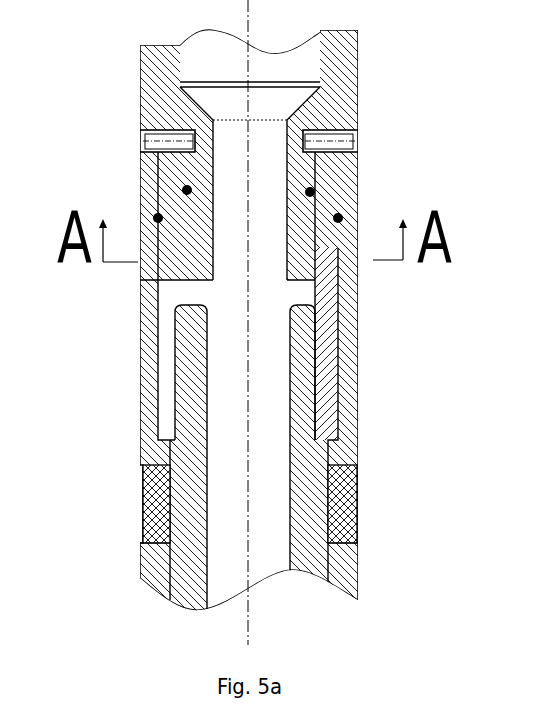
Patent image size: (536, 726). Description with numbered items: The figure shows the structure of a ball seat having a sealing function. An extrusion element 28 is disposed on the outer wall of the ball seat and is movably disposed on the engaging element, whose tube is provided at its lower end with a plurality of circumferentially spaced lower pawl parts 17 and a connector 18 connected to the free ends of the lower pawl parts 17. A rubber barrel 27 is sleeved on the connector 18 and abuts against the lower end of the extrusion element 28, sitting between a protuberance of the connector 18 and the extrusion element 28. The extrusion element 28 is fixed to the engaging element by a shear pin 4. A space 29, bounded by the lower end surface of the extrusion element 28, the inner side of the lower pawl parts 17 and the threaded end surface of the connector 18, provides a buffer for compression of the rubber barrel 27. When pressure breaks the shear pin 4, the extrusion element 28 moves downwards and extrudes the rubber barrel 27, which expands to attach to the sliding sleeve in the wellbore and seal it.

The shear pin 4 is at (343, 142).
The lower pawl parts 17 is at (170, 393).
The connector 18 is at (162, 565).
The rubber barrel 27 is at (145, 498).
The extrusion element 28 is at (147, 327).
The space 29 is at (207, 292).